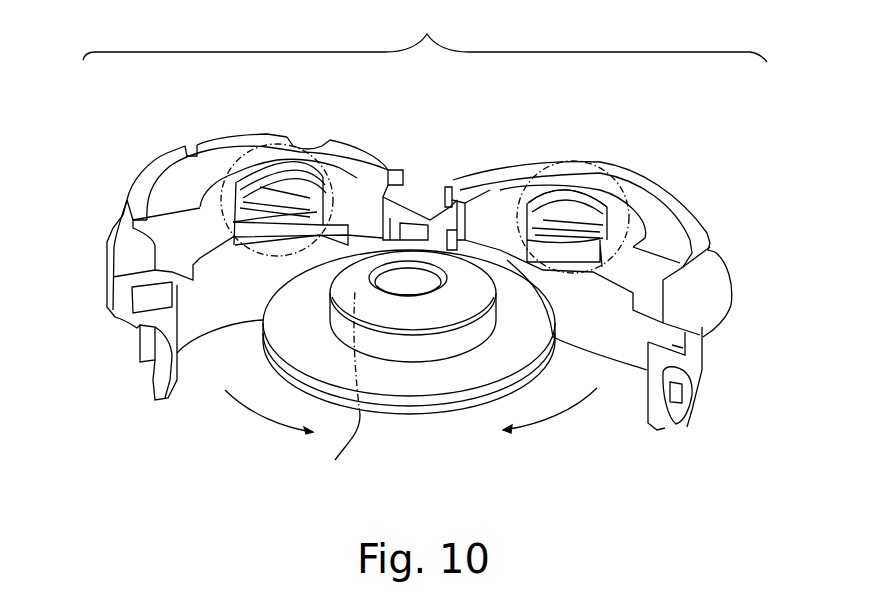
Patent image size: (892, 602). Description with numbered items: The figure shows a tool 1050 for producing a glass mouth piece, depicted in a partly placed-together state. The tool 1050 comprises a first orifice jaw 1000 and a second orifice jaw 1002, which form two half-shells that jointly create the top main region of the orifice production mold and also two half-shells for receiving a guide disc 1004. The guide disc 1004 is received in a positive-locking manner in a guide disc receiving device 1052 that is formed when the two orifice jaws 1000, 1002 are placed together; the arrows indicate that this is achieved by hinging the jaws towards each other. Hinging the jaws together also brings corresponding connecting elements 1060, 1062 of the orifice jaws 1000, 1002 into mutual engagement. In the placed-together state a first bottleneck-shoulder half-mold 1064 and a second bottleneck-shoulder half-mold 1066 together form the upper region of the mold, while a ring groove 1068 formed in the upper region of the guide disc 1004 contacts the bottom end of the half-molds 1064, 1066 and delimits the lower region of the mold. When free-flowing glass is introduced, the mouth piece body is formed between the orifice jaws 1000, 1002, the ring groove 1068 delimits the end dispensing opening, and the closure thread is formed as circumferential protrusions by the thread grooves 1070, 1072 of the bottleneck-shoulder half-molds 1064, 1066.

The first orifice jaw 1000 is at (278, 230).
The second orifice jaw 1002 is at (599, 224).
The guide disc 1004 is at (398, 425).
The tool 1050 is at (425, 36).
The guide disc receiving device 1052 is at (134, 297).
The connecting element 1060 is at (395, 168).
The connecting element 1062 is at (447, 185).
The first bottleneck-shoulder half-mold 1064 is at (270, 140).
The second bottleneck-shoulder half-mold 1066 is at (575, 167).
The ring groove 1068 is at (317, 383).
The thread groove 1070 is at (273, 202).
The thread groove 1072 is at (568, 232).